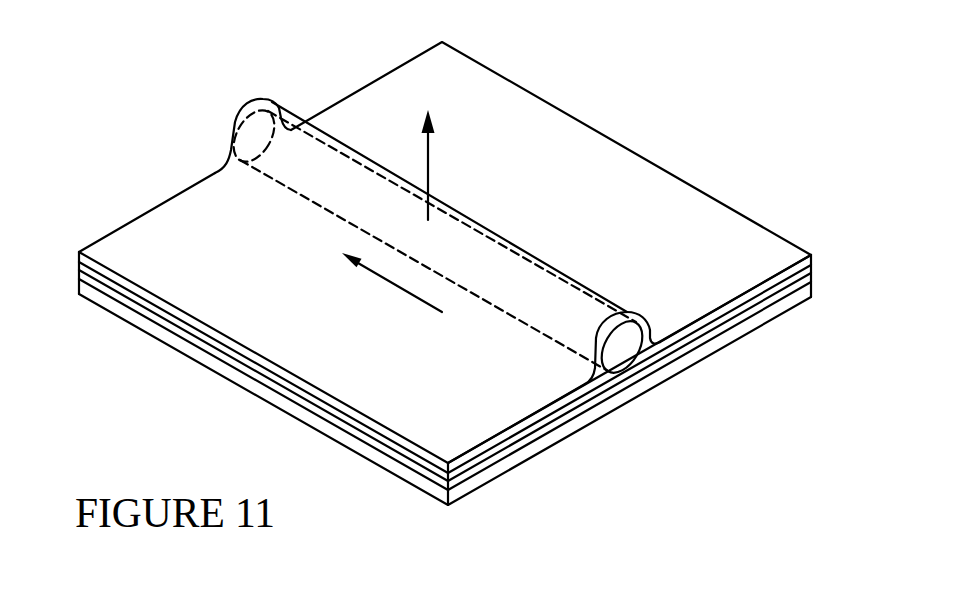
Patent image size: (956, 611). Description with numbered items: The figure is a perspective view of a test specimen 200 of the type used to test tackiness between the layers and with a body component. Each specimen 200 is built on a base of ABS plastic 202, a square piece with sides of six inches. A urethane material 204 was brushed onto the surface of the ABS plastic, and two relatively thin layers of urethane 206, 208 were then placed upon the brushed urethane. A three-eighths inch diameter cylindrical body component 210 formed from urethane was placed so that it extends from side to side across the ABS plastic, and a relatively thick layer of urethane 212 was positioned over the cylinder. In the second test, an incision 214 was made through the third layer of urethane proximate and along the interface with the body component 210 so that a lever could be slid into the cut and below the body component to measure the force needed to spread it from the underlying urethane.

The specimen 200 is at (96, 162).
The base of ABS plastic 202 is at (707, 358).
The brushed urethane material 204 is at (757, 316).
The thin layer of urethane 206 is at (813, 278).
The thin layer of urethane 208 is at (813, 264).
The cylindrical body component 210 is at (623, 360).
The thick layer of urethane 212 is at (771, 243).
The incision 214 is at (388, 284).